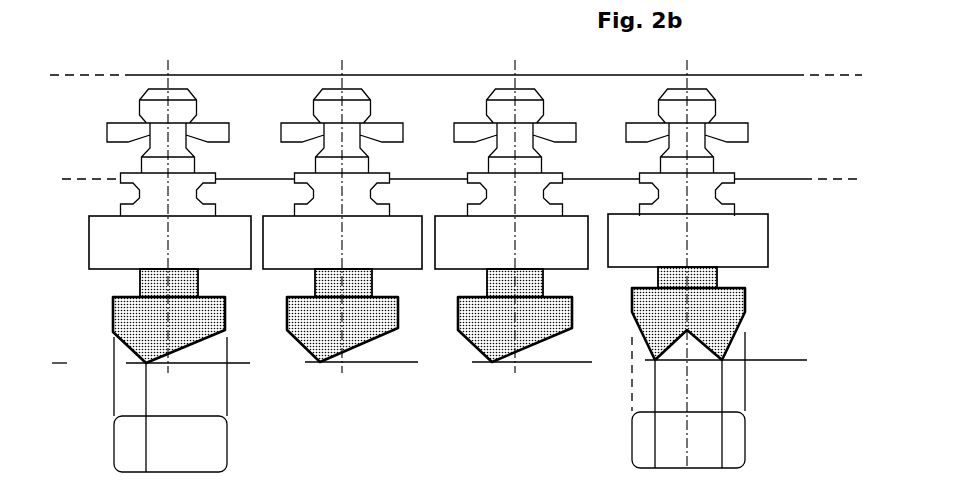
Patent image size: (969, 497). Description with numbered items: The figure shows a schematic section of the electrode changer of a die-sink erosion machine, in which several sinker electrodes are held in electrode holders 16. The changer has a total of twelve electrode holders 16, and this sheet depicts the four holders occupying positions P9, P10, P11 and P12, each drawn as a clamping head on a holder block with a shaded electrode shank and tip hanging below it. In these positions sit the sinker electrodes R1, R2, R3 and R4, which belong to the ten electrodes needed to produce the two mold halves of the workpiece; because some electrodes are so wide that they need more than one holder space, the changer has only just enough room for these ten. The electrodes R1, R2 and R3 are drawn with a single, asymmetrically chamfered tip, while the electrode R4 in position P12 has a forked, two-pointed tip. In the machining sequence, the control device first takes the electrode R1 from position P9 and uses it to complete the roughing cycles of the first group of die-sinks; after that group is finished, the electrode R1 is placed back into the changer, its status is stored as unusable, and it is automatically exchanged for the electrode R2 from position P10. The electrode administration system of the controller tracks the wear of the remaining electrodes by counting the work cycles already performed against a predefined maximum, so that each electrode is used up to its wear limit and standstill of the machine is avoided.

The electrode holder position P9 is at (170, 266).
The electrode holder position P10 is at (340, 216).
The electrode holder position P11 is at (511, 216).
The electrode holder position P12 is at (722, 264).
The sinker electrode R1 is at (166, 366).
The sinker electrode R2 is at (340, 366).
The sinker electrode R3 is at (511, 366).
The sinker electrode R4 is at (705, 362).
The electrode holder 16 is at (753, 247).